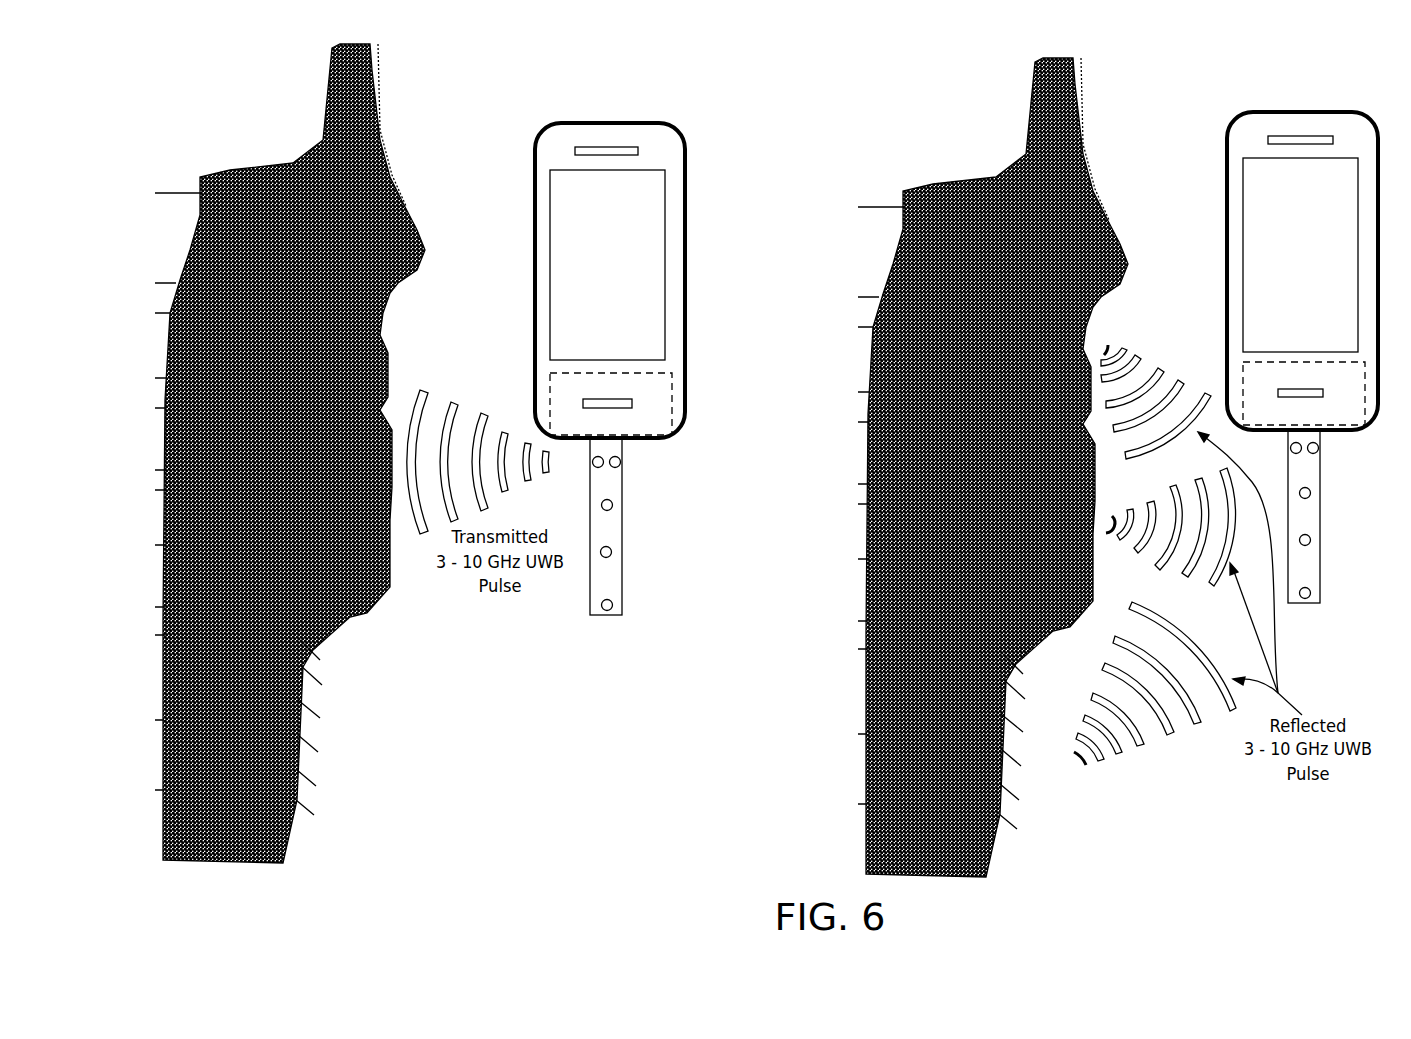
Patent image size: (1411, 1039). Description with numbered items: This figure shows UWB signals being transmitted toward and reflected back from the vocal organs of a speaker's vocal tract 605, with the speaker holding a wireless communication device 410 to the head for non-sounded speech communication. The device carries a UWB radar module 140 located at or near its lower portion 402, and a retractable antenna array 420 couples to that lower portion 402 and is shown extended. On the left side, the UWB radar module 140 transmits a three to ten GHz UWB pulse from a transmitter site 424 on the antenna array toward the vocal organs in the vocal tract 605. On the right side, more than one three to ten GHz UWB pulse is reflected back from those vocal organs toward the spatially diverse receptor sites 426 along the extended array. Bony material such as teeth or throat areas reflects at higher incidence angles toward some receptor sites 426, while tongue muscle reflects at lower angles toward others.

The vocal tract 605 is at (641, 460).
The wireless communication device 410 is at (952, 236).
The UWB radar module 140 is at (672, 378).
The lower portion 402 is at (688, 420).
The retractable antenna array 420 is at (614, 628).
The transmitter site 424 is at (623, 463).
The receptor sites 426 is at (606, 468).